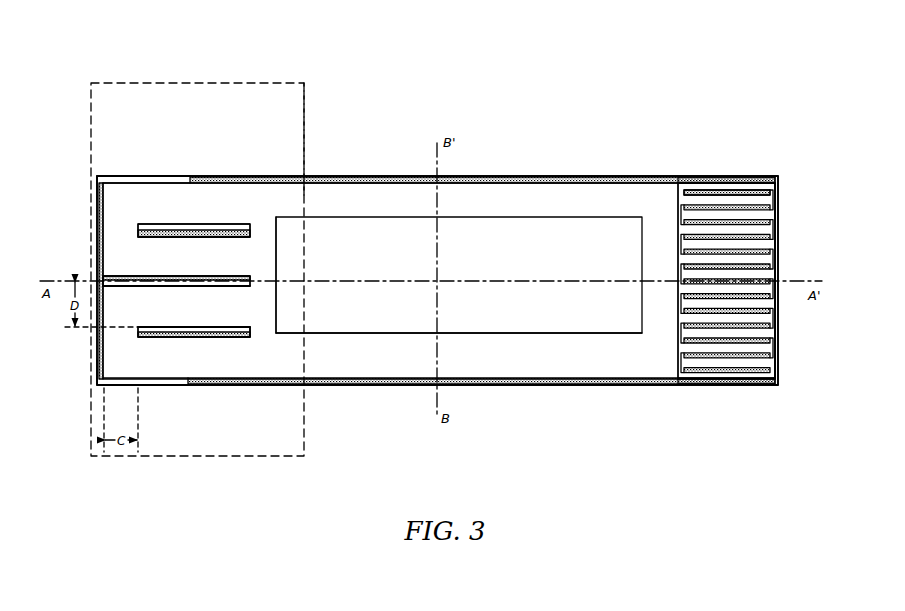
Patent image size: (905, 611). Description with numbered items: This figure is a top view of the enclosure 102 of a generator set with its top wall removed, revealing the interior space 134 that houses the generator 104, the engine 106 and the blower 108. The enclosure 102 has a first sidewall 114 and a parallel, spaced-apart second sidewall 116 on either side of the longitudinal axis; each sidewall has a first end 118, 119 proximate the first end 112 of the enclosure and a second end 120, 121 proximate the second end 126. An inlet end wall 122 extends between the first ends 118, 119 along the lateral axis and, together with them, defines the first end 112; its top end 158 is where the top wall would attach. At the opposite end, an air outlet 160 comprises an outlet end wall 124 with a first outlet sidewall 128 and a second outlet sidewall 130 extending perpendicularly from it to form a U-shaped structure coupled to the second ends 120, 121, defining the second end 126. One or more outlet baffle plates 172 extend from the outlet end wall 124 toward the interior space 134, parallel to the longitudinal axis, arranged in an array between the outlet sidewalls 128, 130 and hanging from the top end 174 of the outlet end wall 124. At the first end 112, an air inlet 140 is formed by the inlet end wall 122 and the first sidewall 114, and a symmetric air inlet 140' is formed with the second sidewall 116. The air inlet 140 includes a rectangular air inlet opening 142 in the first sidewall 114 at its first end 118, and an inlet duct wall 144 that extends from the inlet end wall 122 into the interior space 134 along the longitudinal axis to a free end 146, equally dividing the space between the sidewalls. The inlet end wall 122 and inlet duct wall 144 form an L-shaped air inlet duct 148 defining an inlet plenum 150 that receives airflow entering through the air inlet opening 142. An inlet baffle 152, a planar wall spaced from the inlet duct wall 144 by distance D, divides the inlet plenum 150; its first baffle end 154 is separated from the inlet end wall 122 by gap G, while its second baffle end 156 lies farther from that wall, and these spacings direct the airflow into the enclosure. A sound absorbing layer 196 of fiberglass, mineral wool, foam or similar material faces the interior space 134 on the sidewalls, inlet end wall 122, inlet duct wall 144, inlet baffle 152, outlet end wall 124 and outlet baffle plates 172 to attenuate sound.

The enclosure 102 is at (736, 74).
The generator 104 is at (459, 328).
The engine 106 is at (459, 328).
The blower 108 is at (392, 335).
The first end of the enclosure 112 is at (113, 150).
The first sidewall 114 is at (555, 385).
The second sidewall 116 is at (522, 176).
The first end of the first sidewall 118 is at (97, 385).
The first end of the second sidewall 119 is at (97, 176).
The second end of the first sidewall 120 is at (678, 385).
The second end of the second sidewall 121 is at (678, 183).
The inlet end wall 122 is at (97, 195).
The outlet end wall 124 is at (778, 262).
The second end of the enclosure 126 is at (742, 155).
The first outlet sidewall 128 is at (705, 385).
The second outlet sidewall 130 is at (722, 176).
The interior space 134 is at (517, 359).
The air inlet 140 is at (197, 299).
The air inlet 140' is at (333, 133).
The air inlet opening 142 is at (183, 394).
The inlet duct wall 144 is at (139, 289).
The free end 146 is at (254, 277).
The air inlet duct 148 is at (146, 311).
The inlet plenum 150 is at (238, 303).
The inlet baffle 152 is at (194, 222).
The first baffle end 154 is at (136, 333).
The second baffle end 156 is at (253, 337).
The top end of the inlet end wall 158 is at (101, 215).
The air outlet 160 is at (779, 159).
The outlet baffle plates 172 is at (722, 357).
The top end of the outlet end wall 174 is at (778, 207).
The sound absorbing layer 196 is at (235, 224).